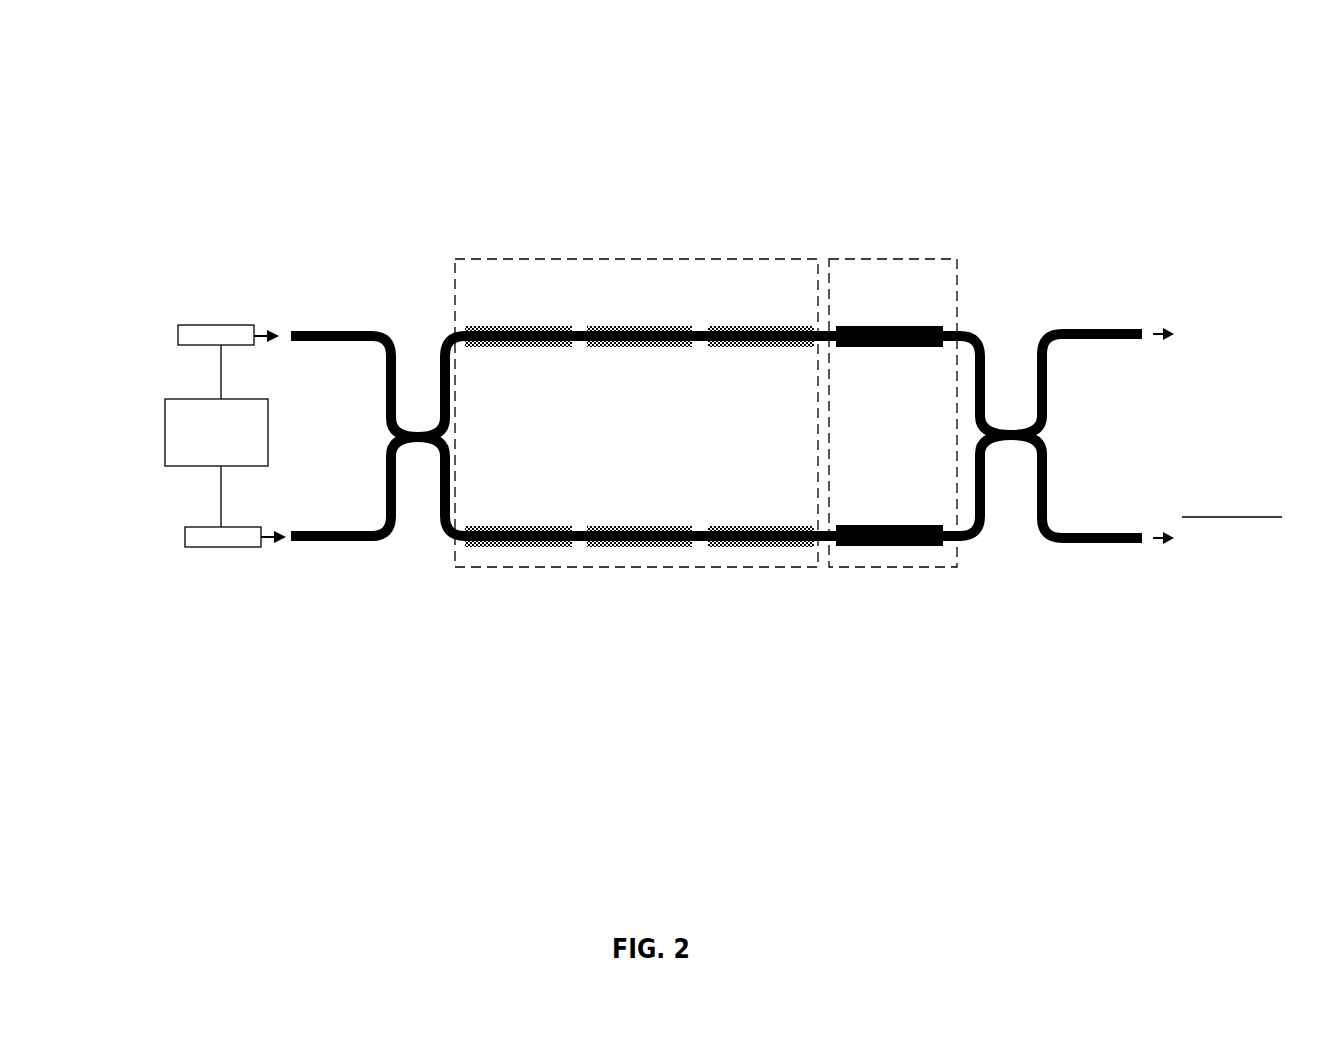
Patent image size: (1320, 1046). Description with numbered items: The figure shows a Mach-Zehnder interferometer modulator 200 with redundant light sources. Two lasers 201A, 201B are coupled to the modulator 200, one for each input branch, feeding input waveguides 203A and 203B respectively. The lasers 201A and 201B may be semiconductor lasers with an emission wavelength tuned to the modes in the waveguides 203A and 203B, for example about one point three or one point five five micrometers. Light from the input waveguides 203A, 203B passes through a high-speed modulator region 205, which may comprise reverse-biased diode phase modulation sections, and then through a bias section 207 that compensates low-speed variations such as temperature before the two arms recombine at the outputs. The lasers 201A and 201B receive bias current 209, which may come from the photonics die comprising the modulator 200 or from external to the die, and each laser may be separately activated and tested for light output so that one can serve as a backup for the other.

The Mach-Zehnder interferometer modulator 200 is at (232, 125).
The laser 201A is at (211, 325).
The laser 201B is at (231, 550).
The input waveguide 203A is at (348, 328).
The input waveguide 203B is at (325, 530).
The high-speed modulator region 205 is at (534, 258).
The bias section 207 is at (882, 258).
The bias current 209 is at (216, 436).